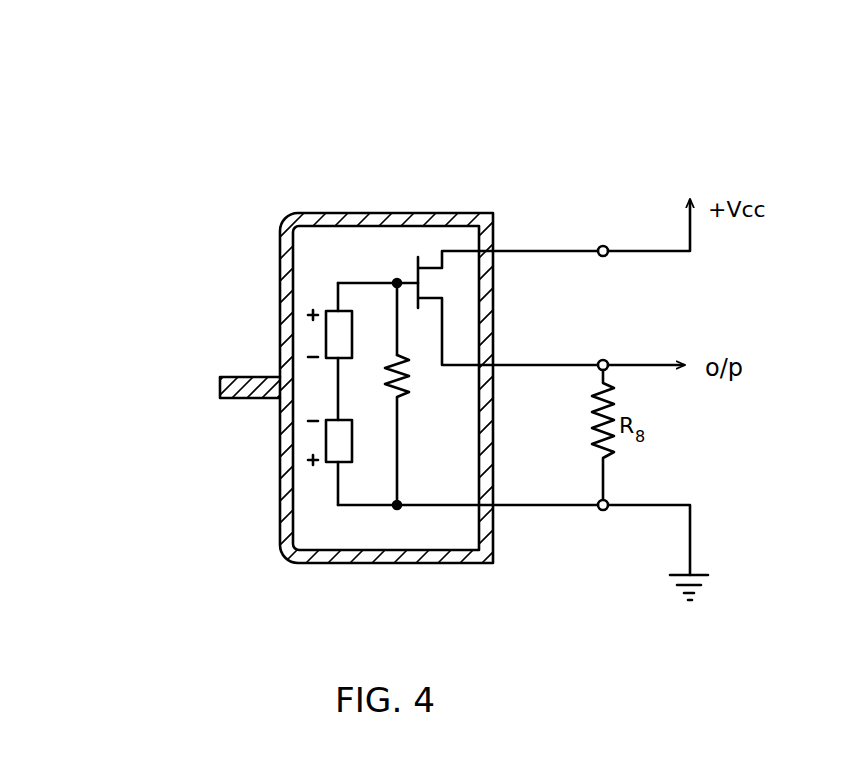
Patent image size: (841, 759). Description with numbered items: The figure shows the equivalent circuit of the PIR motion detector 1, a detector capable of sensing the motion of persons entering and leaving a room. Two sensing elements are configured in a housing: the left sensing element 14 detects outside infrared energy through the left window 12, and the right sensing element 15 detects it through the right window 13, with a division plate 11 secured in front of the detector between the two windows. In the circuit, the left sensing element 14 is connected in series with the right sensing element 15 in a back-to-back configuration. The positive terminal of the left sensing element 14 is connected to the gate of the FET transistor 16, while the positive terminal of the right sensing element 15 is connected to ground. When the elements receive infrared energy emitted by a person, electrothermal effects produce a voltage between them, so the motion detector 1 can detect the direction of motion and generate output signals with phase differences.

The PIR motion detector 1 is at (278, 255).
The division plate 11 is at (225, 377).
The left window 12 is at (280, 338).
The right window 13 is at (285, 445).
The left sensing element 14 is at (337, 325).
The right sensing element 15 is at (343, 452).
The FET transistor 16 is at (433, 283).